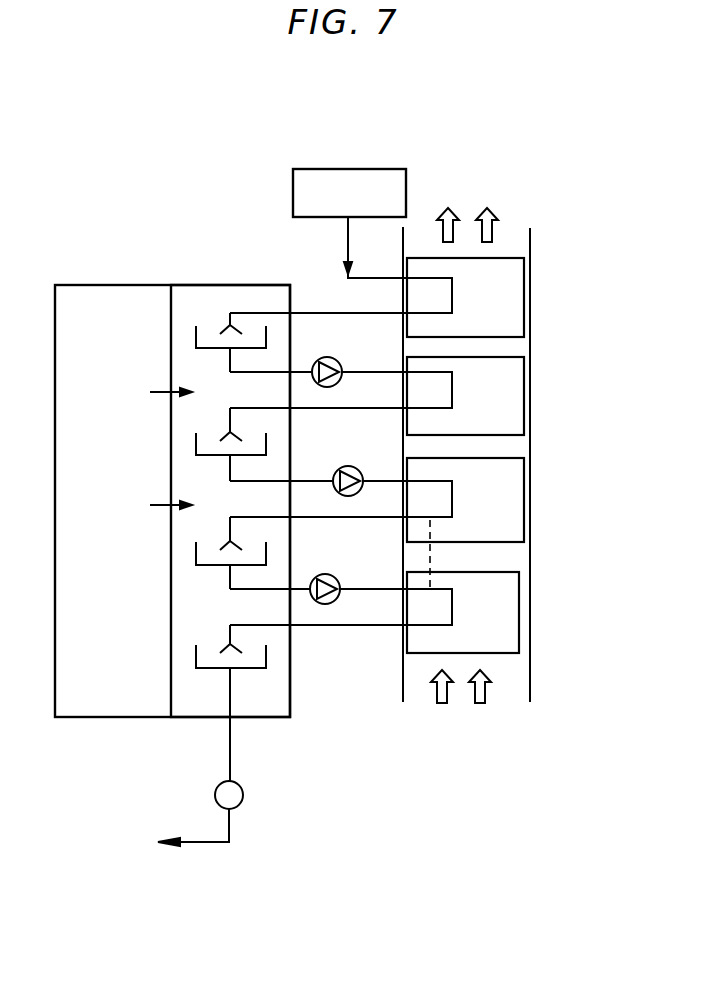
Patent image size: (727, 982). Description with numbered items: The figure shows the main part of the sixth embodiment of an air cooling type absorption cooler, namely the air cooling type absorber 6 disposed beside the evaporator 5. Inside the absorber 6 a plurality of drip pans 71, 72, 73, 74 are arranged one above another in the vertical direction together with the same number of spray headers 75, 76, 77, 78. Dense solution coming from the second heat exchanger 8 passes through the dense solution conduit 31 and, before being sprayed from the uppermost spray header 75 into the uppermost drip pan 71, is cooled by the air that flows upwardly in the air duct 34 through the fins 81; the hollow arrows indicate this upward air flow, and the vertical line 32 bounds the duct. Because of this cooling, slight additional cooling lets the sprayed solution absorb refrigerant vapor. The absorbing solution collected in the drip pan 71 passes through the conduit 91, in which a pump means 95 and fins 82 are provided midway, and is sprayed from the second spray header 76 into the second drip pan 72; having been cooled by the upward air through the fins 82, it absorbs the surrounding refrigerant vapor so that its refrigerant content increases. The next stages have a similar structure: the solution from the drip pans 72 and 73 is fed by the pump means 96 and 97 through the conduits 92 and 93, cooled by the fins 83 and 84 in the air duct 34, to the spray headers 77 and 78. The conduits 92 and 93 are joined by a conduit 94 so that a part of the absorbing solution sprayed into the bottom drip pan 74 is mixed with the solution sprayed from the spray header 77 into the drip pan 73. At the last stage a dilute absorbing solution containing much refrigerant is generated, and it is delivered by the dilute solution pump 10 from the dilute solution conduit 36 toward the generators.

The evaporator 5 is at (70, 425).
The air cooling type absorber 6 is at (278, 693).
The second heat exchanger 8 is at (376, 168).
The dilute solution pump 10 is at (243, 791).
The dense solution conduit 31 is at (348, 248).
The wall 32 is at (530, 668).
The air duct 34 is at (512, 683).
The dilute solution conduit 36 is at (200, 845).
The drip pan 71 is at (210, 349).
The drip pan 72 is at (210, 456).
The drip pan 73 is at (210, 566).
The drip pan 74 is at (210, 669).
The spray header 75 is at (224, 325).
The spray header 76 is at (224, 433).
The spray header 77 is at (224, 542).
The spray header 78 is at (224, 645).
The fins 81 is at (524, 303).
The fins 82 is at (524, 402).
The fins 83 is at (524, 510).
The fins 84 is at (519, 617).
The conduit 91 is at (362, 372).
The conduit 92 is at (372, 481).
The conduit 93 is at (359, 589).
The conduit 94 is at (432, 553).
The pump means 95 is at (335, 360).
The pump means 96 is at (341, 467).
The pump means 97 is at (338, 578).